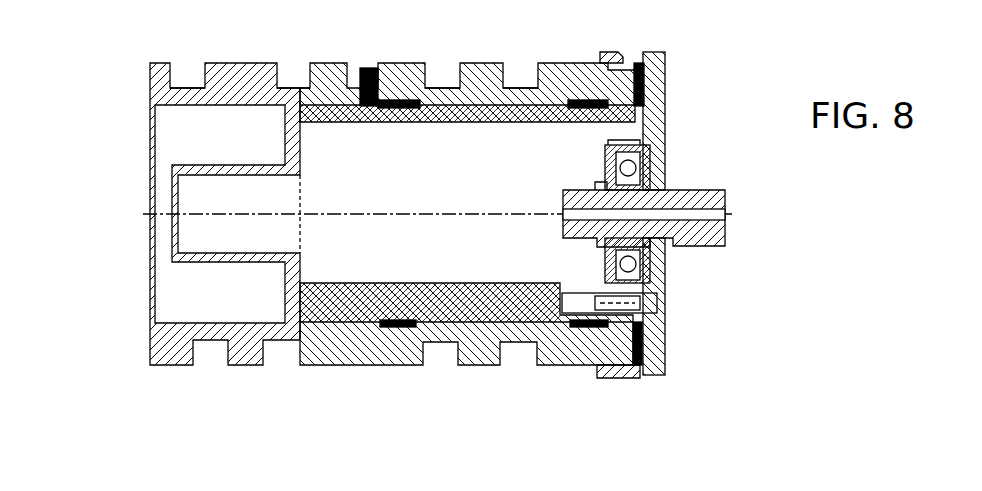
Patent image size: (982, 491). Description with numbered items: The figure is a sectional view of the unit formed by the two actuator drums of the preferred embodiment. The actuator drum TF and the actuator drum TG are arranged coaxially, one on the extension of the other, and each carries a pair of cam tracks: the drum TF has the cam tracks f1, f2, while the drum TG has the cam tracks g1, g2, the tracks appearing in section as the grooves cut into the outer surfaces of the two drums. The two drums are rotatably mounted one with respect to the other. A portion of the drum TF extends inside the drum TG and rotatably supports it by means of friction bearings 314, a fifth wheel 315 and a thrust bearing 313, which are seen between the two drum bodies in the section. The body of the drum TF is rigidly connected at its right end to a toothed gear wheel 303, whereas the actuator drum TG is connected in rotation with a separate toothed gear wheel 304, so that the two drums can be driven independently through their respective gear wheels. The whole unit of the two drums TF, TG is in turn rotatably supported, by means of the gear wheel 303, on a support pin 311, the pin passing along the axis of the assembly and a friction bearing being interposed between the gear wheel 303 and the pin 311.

The cam track f1 is at (182, 88).
The cam track f2 is at (297, 88).
The cam track g1 is at (519, 88).
The cam track g2 is at (442, 88).
The actuator drum TF is at (244, 374).
The actuator drum TG is at (416, 374).
The thrust bearing 313 is at (366, 66).
The friction bearings 314 is at (384, 320).
The fifth wheel 315 is at (663, 340).
The toothed gear wheel 303 is at (665, 375).
The toothed gear wheel 304 is at (612, 52).
The support pin 311 is at (697, 190).